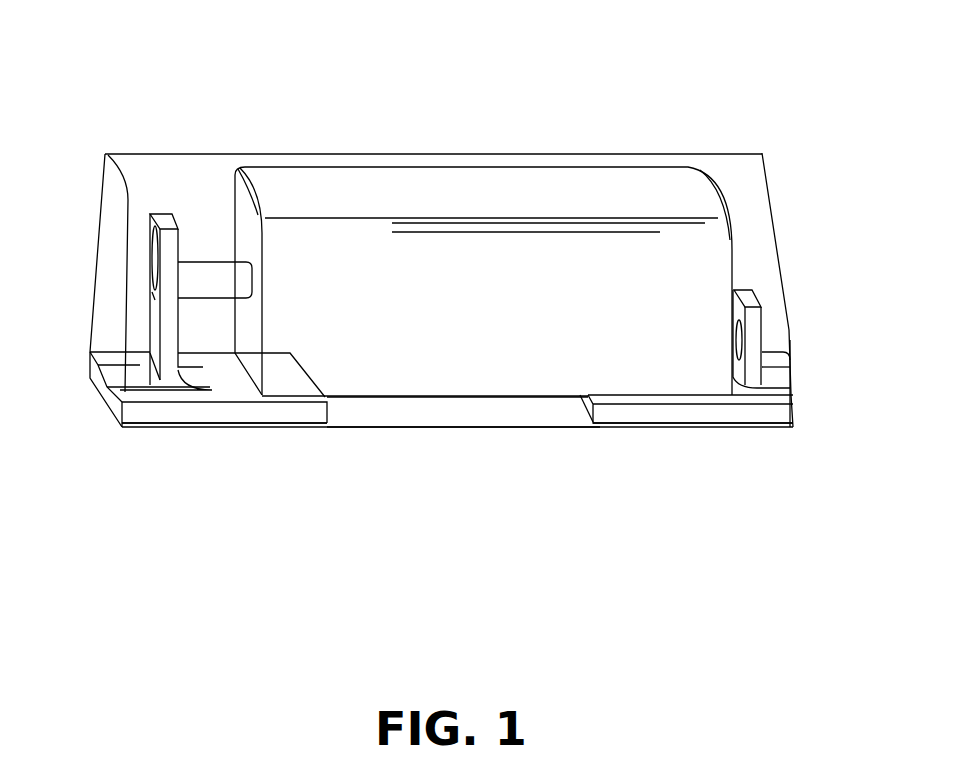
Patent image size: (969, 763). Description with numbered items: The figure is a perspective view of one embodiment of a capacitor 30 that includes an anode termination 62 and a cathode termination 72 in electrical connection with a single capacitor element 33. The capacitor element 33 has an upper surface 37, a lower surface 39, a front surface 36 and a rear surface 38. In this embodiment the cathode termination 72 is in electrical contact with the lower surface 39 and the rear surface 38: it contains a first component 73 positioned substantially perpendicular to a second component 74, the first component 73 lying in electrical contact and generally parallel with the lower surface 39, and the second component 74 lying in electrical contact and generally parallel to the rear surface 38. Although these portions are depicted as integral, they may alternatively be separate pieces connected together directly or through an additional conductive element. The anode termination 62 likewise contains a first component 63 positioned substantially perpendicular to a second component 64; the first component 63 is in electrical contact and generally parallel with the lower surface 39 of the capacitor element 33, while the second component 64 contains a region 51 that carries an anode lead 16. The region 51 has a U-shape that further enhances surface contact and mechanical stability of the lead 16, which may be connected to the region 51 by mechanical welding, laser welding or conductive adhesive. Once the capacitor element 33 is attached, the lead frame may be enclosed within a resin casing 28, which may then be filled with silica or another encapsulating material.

The anode lead 16 is at (213, 287).
The resin casing 28 is at (138, 173).
The capacitor 30 is at (540, 119).
The capacitor element 33 is at (505, 324).
The front surface 36 is at (245, 205).
The upper surface 37 is at (565, 200).
The rear surface 38 is at (728, 248).
The lower surface 39 is at (463, 397).
The region 51 is at (178, 267).
The anode termination 62 is at (210, 430).
The first component 63 is at (143, 415).
The second component 64 is at (158, 312).
The cathode termination 72 is at (712, 428).
The first component 73 is at (628, 413).
The second component 74 is at (752, 333).